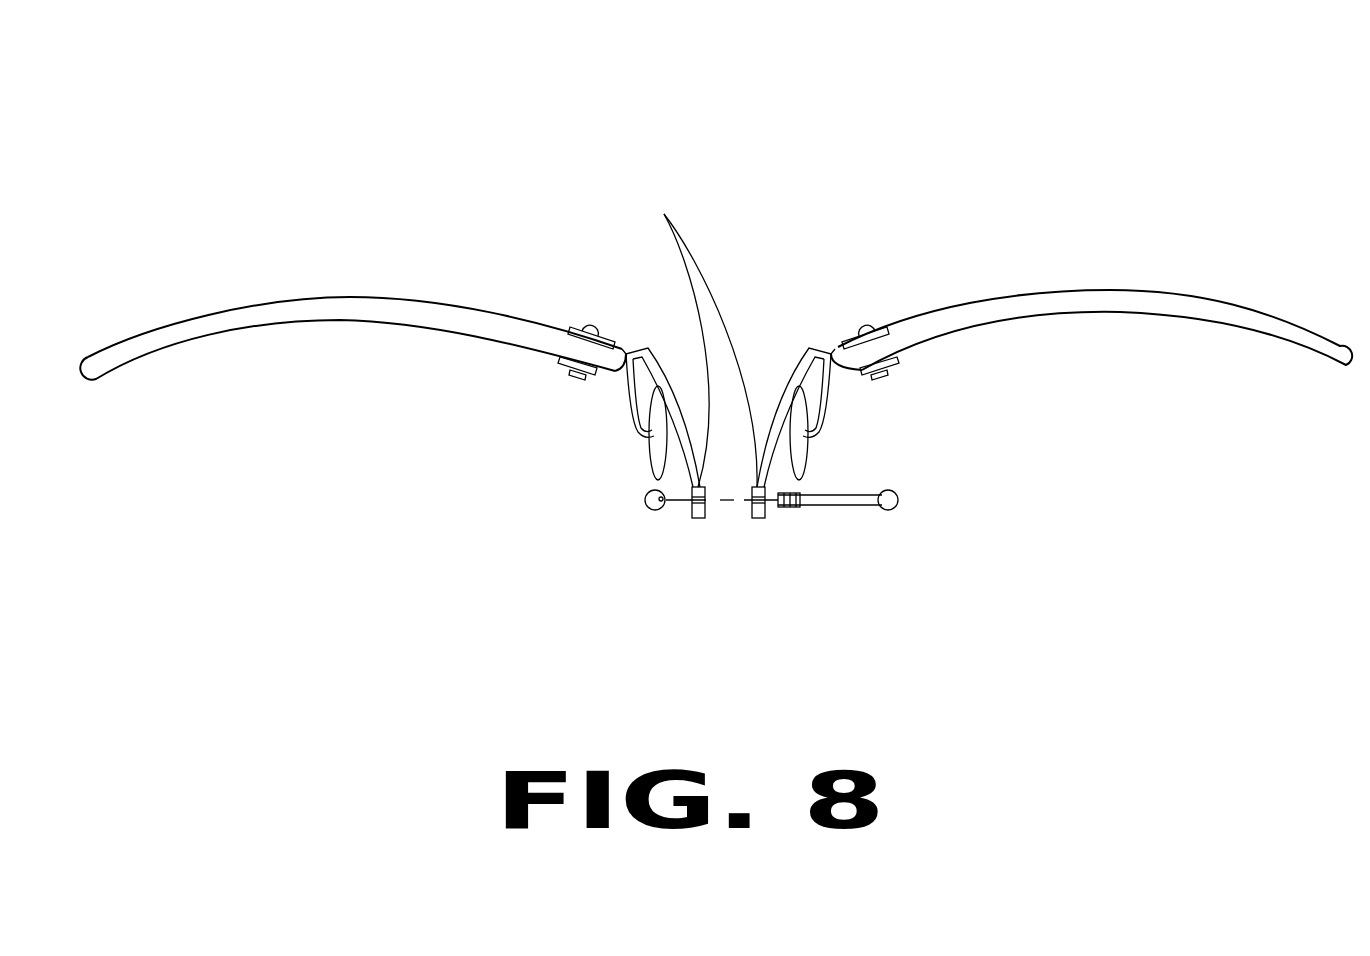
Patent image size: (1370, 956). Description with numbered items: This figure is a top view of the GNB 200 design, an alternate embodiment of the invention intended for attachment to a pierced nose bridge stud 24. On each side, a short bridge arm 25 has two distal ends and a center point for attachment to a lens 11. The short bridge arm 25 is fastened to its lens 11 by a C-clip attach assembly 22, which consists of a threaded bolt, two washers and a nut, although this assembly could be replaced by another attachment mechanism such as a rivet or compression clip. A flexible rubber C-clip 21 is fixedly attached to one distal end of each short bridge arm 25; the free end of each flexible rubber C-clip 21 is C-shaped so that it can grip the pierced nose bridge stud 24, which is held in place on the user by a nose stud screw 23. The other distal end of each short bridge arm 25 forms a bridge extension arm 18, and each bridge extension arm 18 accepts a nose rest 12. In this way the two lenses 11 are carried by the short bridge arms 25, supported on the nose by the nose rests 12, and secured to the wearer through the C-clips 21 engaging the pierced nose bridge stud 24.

The lens 11 is at (333, 320).
The nose rest 12 is at (656, 488).
The bridge extension arm 18 is at (632, 400).
The flexible rubber C-clip 21 is at (699, 326).
The C-clip attach assembly 22 is at (562, 363).
The nose stud screw 23 is at (653, 511).
The pierced nose bridge stud 24 is at (817, 507).
The short bridge arm 25 is at (660, 357).
The GNB design 200 is at (956, 194).